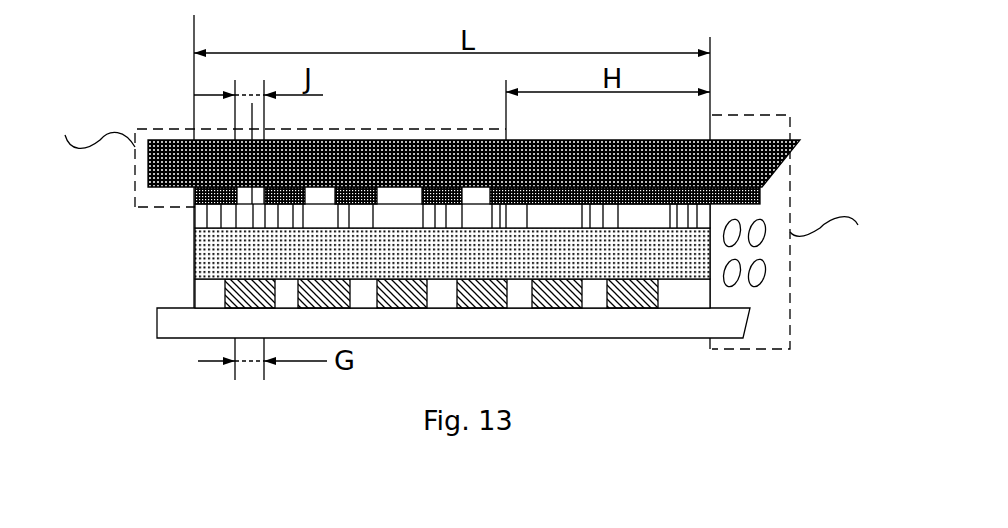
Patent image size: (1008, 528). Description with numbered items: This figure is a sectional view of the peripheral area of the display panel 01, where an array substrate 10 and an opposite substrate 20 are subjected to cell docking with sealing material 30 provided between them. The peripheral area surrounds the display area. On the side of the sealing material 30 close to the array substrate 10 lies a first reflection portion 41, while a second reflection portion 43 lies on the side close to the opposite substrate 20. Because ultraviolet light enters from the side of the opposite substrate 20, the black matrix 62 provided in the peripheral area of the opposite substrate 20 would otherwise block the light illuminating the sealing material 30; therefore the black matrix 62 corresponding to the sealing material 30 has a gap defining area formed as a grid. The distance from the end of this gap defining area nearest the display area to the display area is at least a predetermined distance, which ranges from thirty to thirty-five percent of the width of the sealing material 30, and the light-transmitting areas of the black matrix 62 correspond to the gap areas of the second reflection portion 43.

The display panel 01 is at (108, 90).
The array substrate 10 is at (733, 317).
The opposite substrate 20 is at (778, 154).
The sealing material 30 is at (195, 248).
The first reflection portion 41 is at (195, 307).
The second reflection portion 43 is at (195, 220).
The black matrix 62 is at (195, 192).